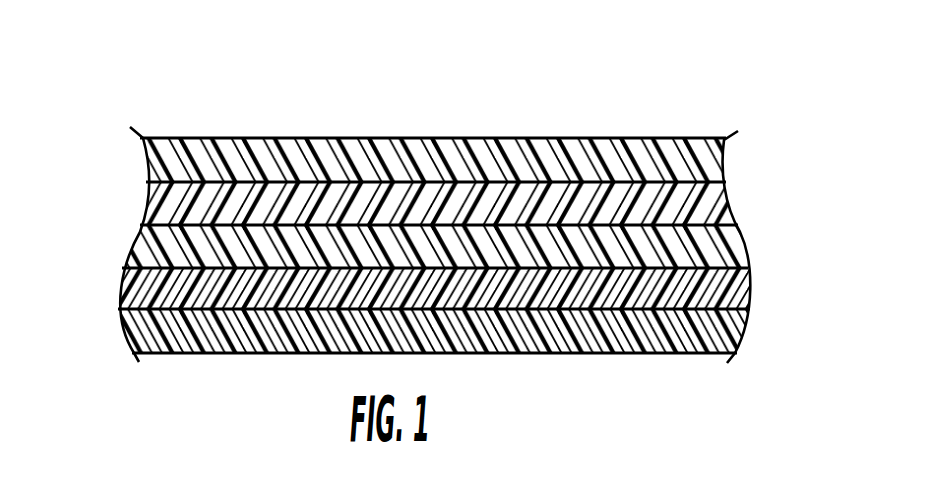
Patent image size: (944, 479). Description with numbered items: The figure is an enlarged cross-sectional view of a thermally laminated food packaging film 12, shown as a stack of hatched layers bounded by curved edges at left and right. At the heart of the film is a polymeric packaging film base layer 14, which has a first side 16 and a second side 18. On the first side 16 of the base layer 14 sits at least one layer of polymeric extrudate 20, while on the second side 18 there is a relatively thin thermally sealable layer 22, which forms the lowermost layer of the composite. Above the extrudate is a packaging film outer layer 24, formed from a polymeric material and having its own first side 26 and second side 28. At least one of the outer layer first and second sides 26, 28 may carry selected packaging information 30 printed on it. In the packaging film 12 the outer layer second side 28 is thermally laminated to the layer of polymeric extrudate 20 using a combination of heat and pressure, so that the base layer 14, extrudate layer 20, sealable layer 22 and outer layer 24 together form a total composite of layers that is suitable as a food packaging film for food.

The thermally laminated film 12 is at (428, 96).
The polymeric packaging film base layer 14 is at (748, 282).
The first side 16 is at (145, 246).
The second side 18 is at (190, 314).
The layer of polymeric extrudate 20 is at (743, 235).
The thermally sealable layer 22 is at (743, 330).
The packaging film outer layer 24 is at (722, 162).
The first side 26 is at (217, 138).
The second side 28 is at (150, 204).
The packaging information 30 is at (722, 208).